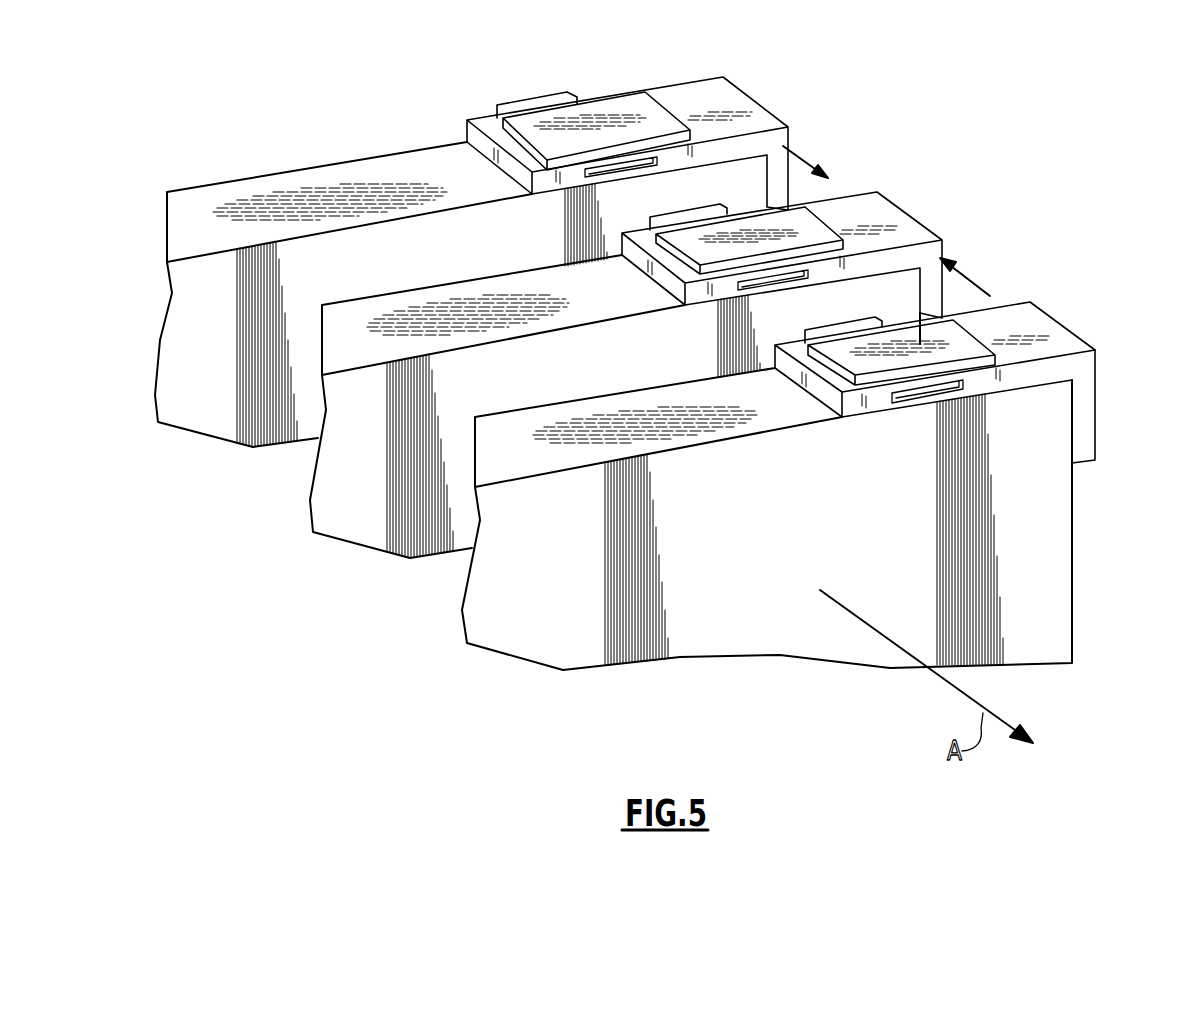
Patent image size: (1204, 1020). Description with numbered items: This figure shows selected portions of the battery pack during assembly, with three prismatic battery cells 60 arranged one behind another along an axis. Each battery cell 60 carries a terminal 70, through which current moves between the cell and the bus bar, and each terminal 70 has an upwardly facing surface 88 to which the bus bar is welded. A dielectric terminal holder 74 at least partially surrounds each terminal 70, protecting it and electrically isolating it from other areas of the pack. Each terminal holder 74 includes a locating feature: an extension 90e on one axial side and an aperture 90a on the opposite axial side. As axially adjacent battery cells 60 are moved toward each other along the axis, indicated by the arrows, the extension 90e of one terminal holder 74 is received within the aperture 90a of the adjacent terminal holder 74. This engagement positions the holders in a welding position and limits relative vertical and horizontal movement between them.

The extension 90e is at (540, 100).
The aperture 90a is at (820, 270).
The upwardly facing surface 88 is at (915, 343).
The terminal 70 is at (965, 345).
The terminal holder 74 is at (1096, 373).
The battery cell 60 is at (1037, 544).